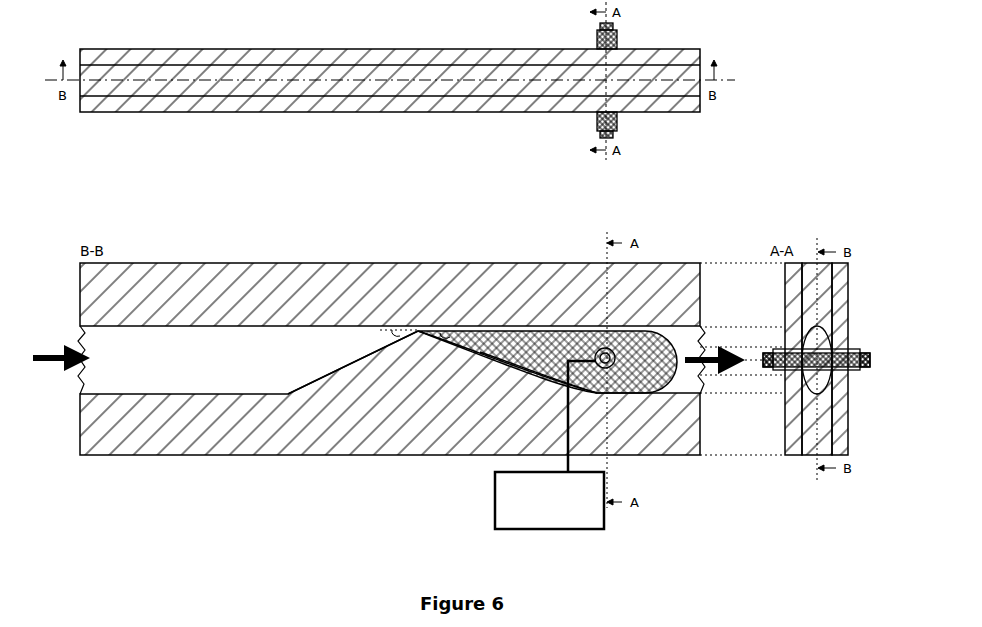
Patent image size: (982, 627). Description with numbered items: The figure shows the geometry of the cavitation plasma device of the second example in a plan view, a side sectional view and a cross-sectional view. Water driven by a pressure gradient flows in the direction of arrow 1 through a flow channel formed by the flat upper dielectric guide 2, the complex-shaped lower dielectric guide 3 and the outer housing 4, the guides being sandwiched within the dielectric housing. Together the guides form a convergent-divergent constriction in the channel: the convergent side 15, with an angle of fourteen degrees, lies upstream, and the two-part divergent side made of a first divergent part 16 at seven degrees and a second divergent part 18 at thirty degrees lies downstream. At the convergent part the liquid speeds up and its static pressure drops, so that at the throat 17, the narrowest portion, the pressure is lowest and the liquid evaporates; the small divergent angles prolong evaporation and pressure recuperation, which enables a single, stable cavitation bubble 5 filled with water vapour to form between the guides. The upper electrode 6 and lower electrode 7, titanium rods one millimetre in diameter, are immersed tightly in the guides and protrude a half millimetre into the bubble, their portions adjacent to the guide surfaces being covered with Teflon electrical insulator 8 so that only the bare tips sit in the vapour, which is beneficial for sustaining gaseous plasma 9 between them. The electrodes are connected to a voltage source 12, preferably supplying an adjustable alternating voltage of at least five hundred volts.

The arrow 1 is at (55, 350).
The upper dielectric guide 2 is at (222, 272).
The lower dielectric guide 3 is at (244, 435).
The outer housing 4 is at (838, 302).
The single, stable cavitation bubble 5 is at (474, 340).
The upper electrode 6 is at (867, 352).
The lower electrode 7 is at (597, 352).
The electrical insulator 8 is at (613, 368).
The gaseous plasma 9 is at (604, 350).
The voltage source 12 is at (540, 518).
The convergent side 15 is at (418, 333).
The first divergent part 16 is at (440, 336).
The throat 17 is at (416, 330).
The second divergent part 18 is at (540, 360).